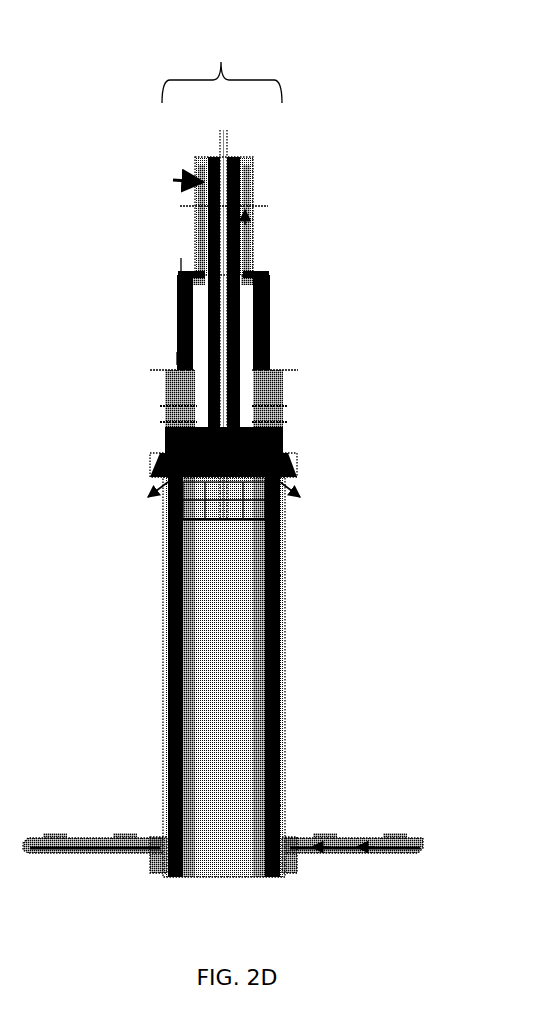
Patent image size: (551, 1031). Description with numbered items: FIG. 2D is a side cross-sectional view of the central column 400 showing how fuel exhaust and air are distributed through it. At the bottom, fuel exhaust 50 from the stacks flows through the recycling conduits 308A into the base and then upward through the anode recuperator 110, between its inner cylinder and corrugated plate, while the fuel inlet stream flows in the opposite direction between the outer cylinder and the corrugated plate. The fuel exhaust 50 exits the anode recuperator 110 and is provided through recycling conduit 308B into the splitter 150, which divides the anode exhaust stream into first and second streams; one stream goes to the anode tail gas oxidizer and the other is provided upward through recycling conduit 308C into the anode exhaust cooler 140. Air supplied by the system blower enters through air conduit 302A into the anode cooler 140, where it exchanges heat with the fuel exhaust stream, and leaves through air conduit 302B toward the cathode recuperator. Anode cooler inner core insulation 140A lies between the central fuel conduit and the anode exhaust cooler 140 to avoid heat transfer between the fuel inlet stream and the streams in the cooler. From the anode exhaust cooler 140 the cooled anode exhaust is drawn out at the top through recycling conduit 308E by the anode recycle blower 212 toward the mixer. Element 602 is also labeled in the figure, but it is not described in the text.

The central column 400 is at (222, 61).
The anode recycle blower 212 is at (134, 182).
The recycling conduit 308E is at (252, 225).
The air conduit 302A is at (172, 258).
The anode exhaust cooler 140 is at (267, 308).
The air conduit 302B is at (185, 359).
The anode cooler inner core insulation 140A is at (253, 363).
The recycling conduit 308C is at (272, 410).
The splitter 150 is at (316, 470).
The recycling conduit 308B is at (285, 512).
The anode recuperator 110 is at (286, 598).
The fuel exhaust 50 is at (412, 830).
The recycling conduit 308A is at (357, 846).
The support block 602 is at (283, 872).